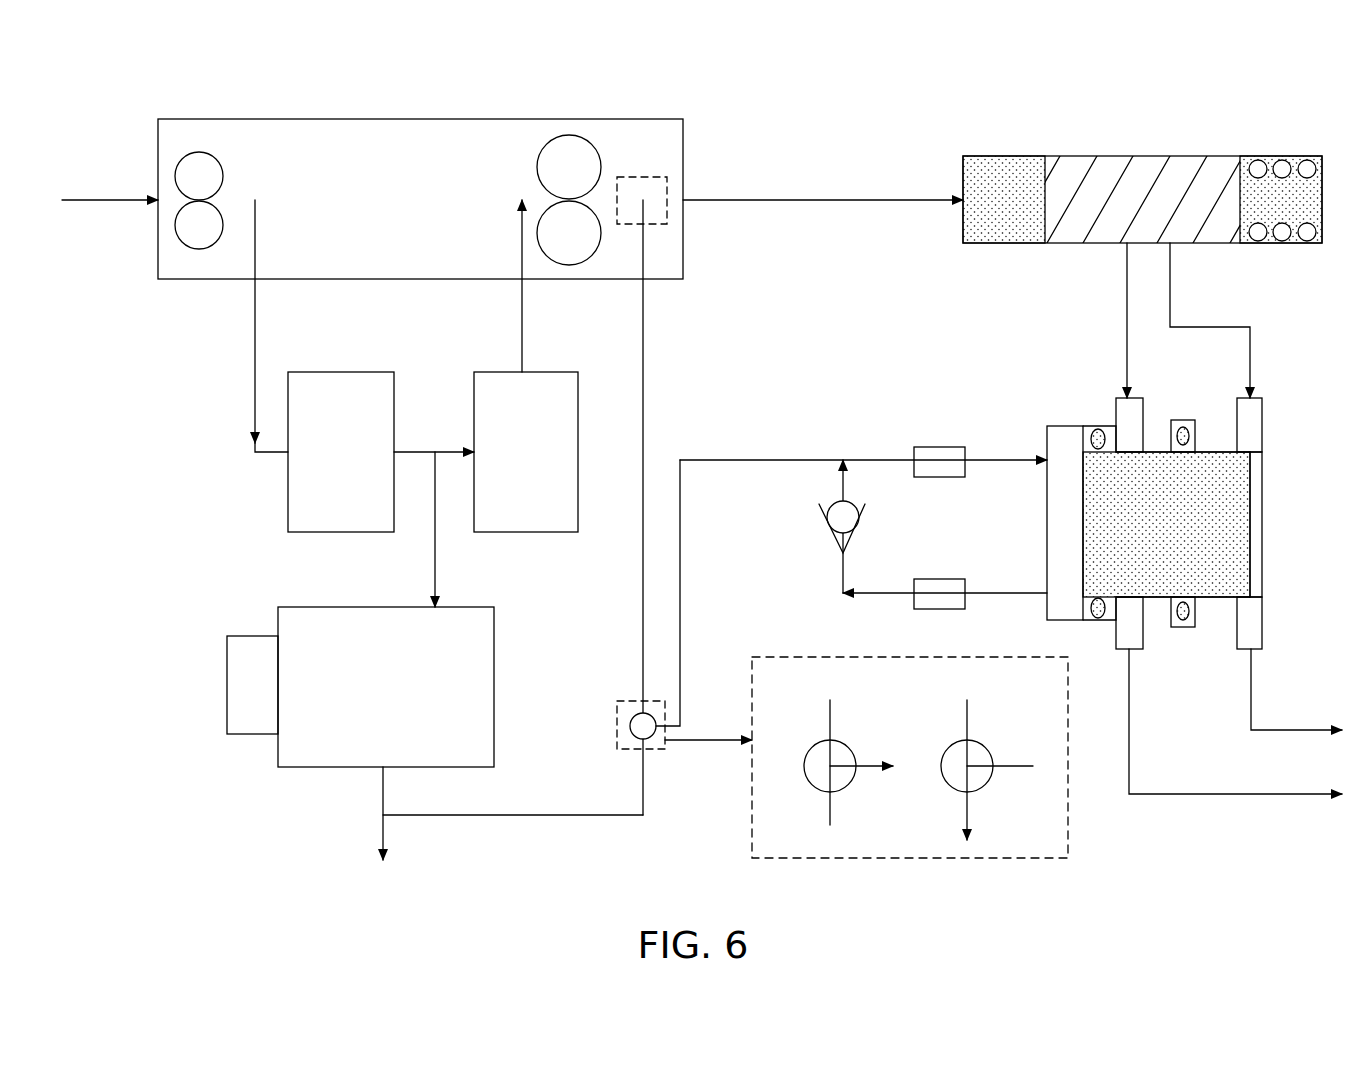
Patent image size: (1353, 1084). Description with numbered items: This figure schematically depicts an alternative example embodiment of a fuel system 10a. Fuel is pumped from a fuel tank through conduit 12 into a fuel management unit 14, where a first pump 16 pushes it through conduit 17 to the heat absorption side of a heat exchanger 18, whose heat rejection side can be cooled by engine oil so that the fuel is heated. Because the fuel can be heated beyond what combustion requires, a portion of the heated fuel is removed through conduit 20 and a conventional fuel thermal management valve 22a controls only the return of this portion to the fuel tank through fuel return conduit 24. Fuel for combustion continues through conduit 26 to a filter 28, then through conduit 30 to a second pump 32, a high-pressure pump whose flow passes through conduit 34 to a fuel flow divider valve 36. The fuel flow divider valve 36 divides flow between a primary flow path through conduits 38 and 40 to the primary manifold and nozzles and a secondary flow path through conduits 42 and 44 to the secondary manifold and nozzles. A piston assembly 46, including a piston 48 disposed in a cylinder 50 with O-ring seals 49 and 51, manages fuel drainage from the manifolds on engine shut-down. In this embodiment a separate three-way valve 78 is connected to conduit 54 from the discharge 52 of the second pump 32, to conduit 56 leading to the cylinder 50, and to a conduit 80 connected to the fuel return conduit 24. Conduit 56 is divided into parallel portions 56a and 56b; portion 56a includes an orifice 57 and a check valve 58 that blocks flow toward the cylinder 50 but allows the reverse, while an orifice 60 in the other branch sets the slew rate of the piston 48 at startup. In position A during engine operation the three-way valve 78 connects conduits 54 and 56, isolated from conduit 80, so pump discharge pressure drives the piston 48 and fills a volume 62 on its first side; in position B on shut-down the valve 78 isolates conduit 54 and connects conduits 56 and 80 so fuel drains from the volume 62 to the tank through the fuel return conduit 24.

The fuel system 10a is at (1190, 118).
The conduit 12 is at (90, 200).
The fuel management unit 14 is at (400, 119).
The first pump 16 is at (220, 164).
The conduit 17 is at (255, 323).
The heat exchanger 18 is at (348, 372).
The conduit 20 is at (435, 576).
The fuel thermal management valve 22a is at (315, 607).
The fuel return conduit 24 is at (383, 805).
The conduit 26 is at (447, 452).
The filter 28 is at (543, 372).
The conduit 30 is at (522, 315).
The second pump 32 is at (584, 138).
The conduit 34 is at (860, 200).
The fuel flow divider valve 36 is at (1020, 167).
The conduit 38 is at (1127, 310).
The conduit 40 is at (1129, 775).
The conduit 42 is at (1250, 355).
The conduit 44 is at (1251, 697).
The piston assembly 46 is at (1262, 480).
The piston 48 is at (1232, 540).
The O-ring seal 49 is at (1096, 428).
The cylinder 50 is at (830, 720).
The O-ring seal 51 is at (1188, 422).
The discharge 52 is at (674, 185).
The conduit 54 is at (643, 375).
The conduit 56 is at (680, 612).
The conduit portion 56a is at (870, 593).
The conduit portion 56b is at (870, 460).
The orifice 57 is at (935, 579).
The check valve 58 is at (826, 524).
The orifice 60 is at (945, 447).
The volume 62 is at (1062, 440).
The three-way valve 78 is at (657, 722).
The conduit 80 is at (570, 815).